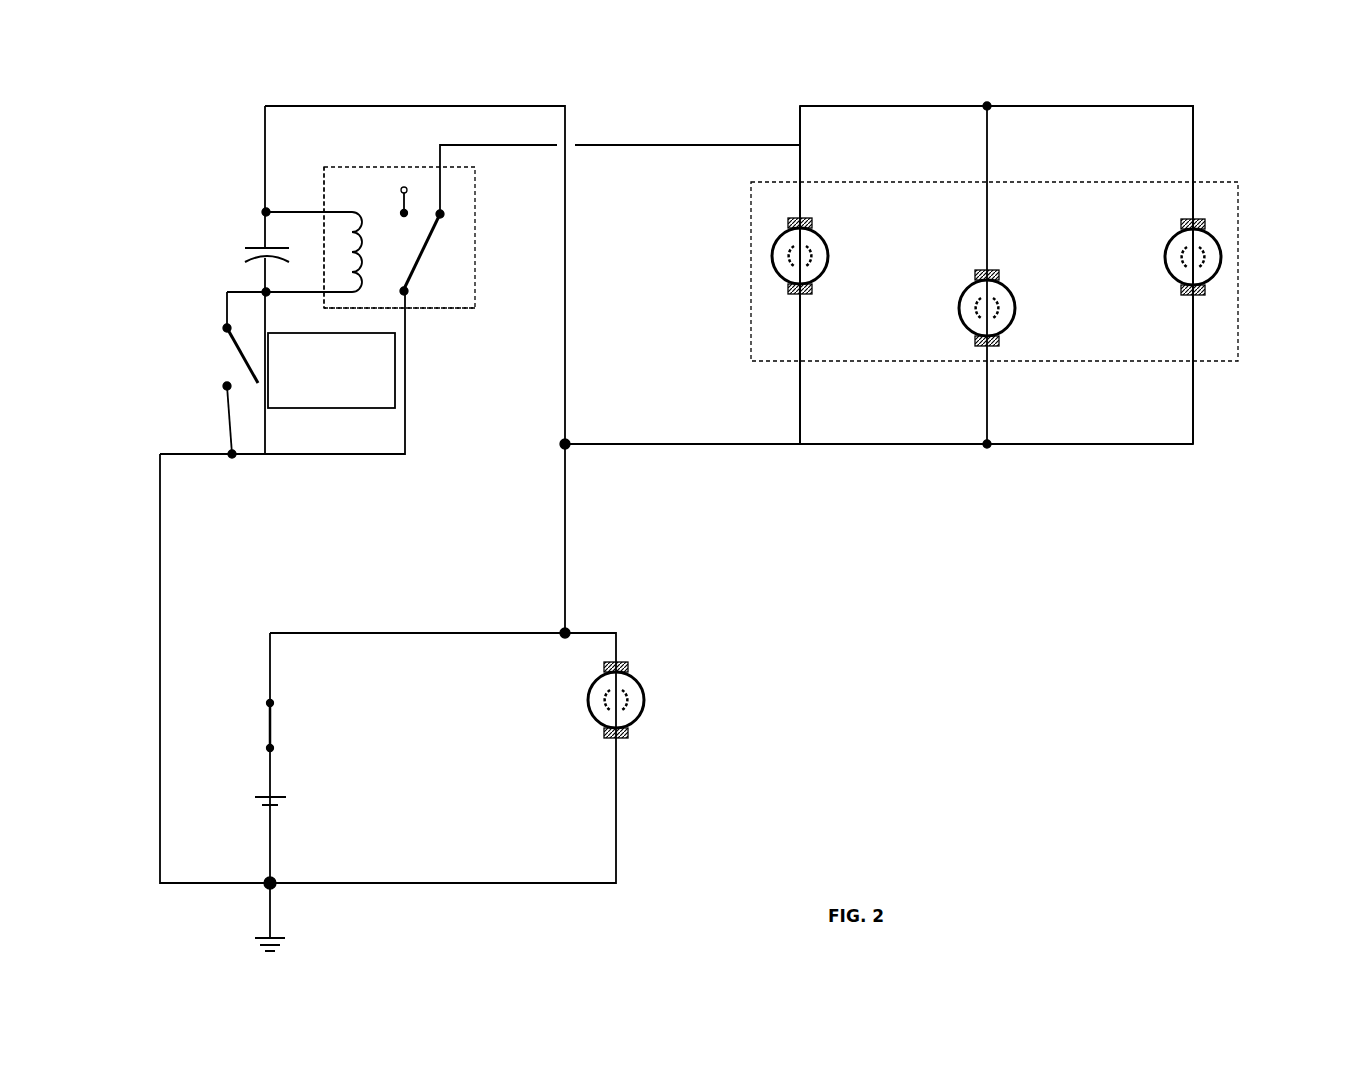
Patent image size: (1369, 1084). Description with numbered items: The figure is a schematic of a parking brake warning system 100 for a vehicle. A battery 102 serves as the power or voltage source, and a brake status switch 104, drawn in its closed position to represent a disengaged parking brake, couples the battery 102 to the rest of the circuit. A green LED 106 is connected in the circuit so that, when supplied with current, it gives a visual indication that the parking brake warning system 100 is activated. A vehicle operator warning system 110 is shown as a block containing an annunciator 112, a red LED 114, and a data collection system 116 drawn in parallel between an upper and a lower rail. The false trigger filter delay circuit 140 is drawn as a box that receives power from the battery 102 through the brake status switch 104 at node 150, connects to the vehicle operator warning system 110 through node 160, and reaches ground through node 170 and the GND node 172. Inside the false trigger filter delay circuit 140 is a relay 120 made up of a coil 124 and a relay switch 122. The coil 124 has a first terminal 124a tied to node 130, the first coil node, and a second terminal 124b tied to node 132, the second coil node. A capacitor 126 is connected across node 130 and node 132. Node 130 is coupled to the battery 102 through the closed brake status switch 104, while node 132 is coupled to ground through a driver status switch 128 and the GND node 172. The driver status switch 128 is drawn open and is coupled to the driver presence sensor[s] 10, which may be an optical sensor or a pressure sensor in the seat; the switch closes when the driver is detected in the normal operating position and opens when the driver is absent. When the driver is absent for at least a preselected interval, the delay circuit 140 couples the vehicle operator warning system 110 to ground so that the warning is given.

The parking brake warning system 100 is at (771, 847).
The battery 102 is at (266, 795).
The brake status switch 104 is at (272, 722).
The green LED 106 is at (645, 698).
The vehicle operator warning system 110 is at (1210, 183).
The annunciator 112 is at (830, 250).
The red LED 114 is at (1082, 288).
The data collection system 116 is at (1222, 250).
The relay 120 is at (475, 197).
The relay switch 122 is at (422, 258).
The coil 124 is at (366, 222).
The first terminal 124a is at (332, 208).
The second terminal 124b is at (330, 293).
The capacitor 126 is at (258, 248).
The driver status switch 128 is at (240, 358).
The node 130 is at (264, 211).
The node 132 is at (262, 291).
The false trigger filter delay circuit 140 is at (190, 122).
The node 150 is at (568, 442).
The node 160 is at (637, 144).
The node 170 is at (232, 456).
The GND node 172 is at (273, 881).
The driver presence sensor[s] 10 is at (323, 408).